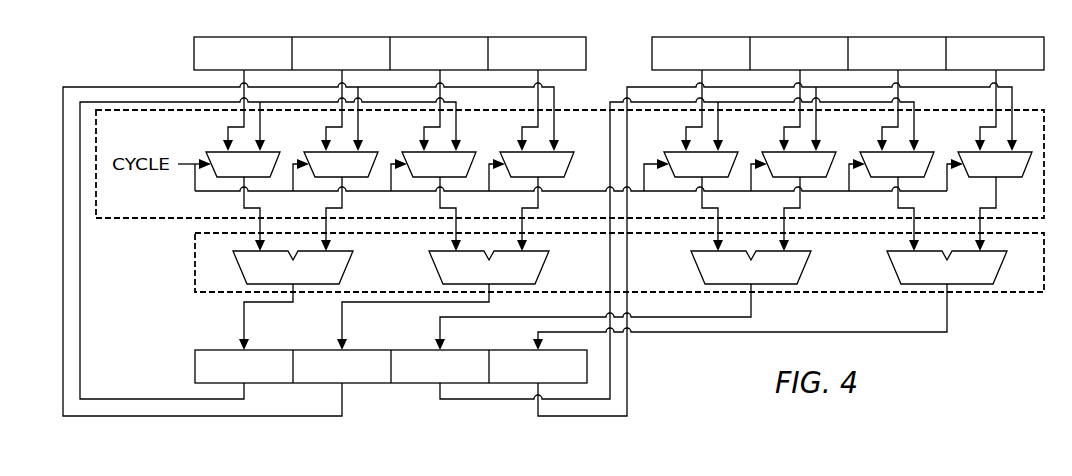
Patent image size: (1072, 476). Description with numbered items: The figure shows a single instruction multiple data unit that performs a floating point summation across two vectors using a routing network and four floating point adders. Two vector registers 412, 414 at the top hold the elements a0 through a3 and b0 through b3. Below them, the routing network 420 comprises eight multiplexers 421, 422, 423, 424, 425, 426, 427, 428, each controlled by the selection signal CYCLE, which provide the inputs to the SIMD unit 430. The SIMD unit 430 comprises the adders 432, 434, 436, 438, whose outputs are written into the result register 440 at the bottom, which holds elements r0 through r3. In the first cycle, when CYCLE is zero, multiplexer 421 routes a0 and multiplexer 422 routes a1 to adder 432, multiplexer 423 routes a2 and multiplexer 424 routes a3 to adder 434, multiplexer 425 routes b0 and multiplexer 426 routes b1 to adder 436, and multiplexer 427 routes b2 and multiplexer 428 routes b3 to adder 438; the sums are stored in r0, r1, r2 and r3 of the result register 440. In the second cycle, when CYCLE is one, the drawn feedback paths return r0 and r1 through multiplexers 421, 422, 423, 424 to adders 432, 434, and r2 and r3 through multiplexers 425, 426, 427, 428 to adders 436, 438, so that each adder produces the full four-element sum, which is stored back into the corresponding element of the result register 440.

The vector register 412 is at (194, 57).
The vector register 414 is at (652, 57).
The routing network 420 is at (122, 220).
The multiplexer 421 is at (222, 151).
The multiplexer 422 is at (320, 151).
The multiplexer 423 is at (418, 151).
The multiplexer 424 is at (516, 151).
The multiplexer 425 is at (680, 151).
The multiplexer 426 is at (778, 151).
The multiplexer 427 is at (876, 151).
The multiplexer 428 is at (974, 151).
The SIMD unit 430 is at (195, 290).
The adder 432 is at (352, 254).
The adder 434 is at (548, 254).
The adder 436 is at (691, 254).
The adder 438 is at (887, 254).
The result register 440 is at (195, 371).